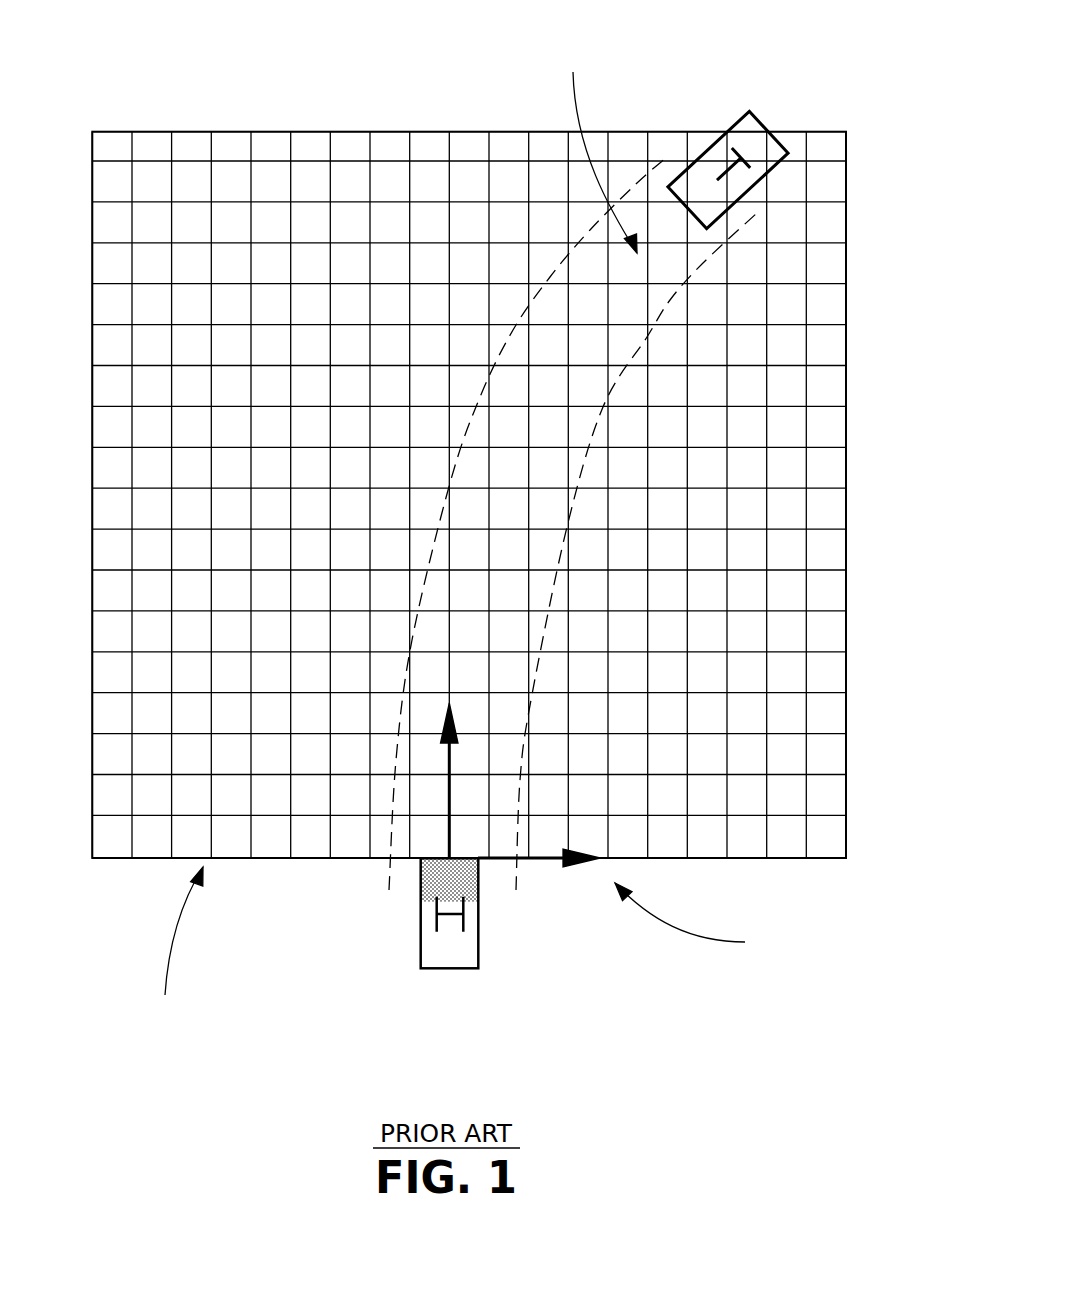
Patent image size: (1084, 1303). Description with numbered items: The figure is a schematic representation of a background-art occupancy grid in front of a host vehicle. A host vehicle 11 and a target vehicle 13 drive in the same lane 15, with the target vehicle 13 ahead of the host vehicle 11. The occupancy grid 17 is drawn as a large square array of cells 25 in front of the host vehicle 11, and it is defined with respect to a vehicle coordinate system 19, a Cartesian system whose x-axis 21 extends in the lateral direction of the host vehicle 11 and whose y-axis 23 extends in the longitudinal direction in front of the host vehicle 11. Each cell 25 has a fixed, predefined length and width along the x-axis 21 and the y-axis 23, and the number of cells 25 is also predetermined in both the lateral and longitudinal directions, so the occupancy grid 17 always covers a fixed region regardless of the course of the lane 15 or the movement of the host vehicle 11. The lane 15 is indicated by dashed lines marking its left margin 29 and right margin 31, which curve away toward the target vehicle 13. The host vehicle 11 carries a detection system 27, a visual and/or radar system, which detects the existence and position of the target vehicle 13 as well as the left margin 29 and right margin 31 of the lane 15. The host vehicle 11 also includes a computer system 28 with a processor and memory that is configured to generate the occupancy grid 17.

The host vehicle 11 is at (449, 957).
The target vehicle 13 is at (755, 133).
The lane 15 is at (596, 148).
The occupancy grid 17 is at (176, 946).
The vehicle coordinate system 19 is at (698, 918).
The x-axis 21 is at (545, 862).
The y-axis 23 is at (448, 782).
The cells 25 is at (152, 840).
The detection system 27 is at (430, 878).
The computer system 28 is at (467, 878).
The left margin 29 is at (555, 268).
The right margin 31 is at (670, 300).